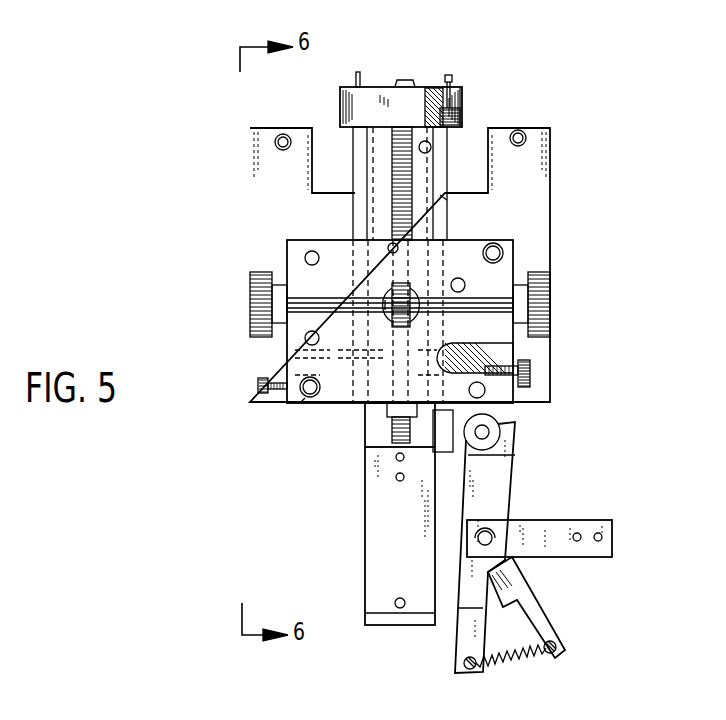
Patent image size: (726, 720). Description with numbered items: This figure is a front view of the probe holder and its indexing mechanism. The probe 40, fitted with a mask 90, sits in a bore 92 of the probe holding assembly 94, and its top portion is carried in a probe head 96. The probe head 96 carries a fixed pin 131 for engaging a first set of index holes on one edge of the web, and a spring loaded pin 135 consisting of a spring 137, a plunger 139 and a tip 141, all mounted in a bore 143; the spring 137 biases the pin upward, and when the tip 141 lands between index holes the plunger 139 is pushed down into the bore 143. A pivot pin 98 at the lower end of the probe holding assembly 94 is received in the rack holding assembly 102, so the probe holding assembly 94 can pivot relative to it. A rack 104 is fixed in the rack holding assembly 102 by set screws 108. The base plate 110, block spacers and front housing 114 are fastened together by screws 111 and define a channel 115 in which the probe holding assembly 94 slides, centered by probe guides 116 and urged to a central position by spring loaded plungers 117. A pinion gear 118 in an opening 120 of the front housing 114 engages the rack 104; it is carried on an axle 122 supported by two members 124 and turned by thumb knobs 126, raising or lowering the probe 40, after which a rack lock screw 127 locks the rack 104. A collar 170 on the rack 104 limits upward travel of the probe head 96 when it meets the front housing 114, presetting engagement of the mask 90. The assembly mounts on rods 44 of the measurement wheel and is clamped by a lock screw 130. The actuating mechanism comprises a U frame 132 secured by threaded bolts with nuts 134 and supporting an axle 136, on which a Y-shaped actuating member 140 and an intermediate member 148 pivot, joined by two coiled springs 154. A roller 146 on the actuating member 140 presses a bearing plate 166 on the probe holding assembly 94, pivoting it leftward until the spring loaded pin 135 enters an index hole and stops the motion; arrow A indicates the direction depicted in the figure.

The base plate 110 is at (293, 182).
The probe guides 116 is at (356, 155).
The probe holding assembly 94 is at (370, 220).
The probe head 96 is at (345, 108).
The mask 90 is at (398, 82).
The fixed pin 131 is at (355, 75).
The bore 143 is at (438, 88).
The tip 141 is at (448, 76).
The spring loaded pin 135 is at (459, 72).
The plunger 139 is at (458, 88).
The spring 137 is at (463, 110).
The bore 92 is at (430, 152).
The probe 40 is at (440, 200).
The front housing 114 is at (473, 268).
The screws 111 is at (305, 252).
The channel 115 is at (390, 246).
The axle 122 is at (300, 318).
The opening 120 is at (393, 288).
The pinion gear 118 is at (395, 318).
The members 124 is at (278, 283).
The thumb knobs 126 is at (252, 322).
The spring loaded plungers 117 is at (556, 322).
The rack lock screw 127 is at (530, 373).
The lock screw 130 is at (257, 392).
The rods 44 is at (300, 404).
The collar 170 is at (388, 412).
The rack holding assembly 102 is at (377, 534).
The rack 104 is at (390, 428).
The set screws 108 is at (396, 477).
The pivot pin 98 is at (399, 610).
The bearing plate 166 is at (455, 436).
The actuating member 140 is at (463, 643).
The roller 146 is at (488, 418).
The U frame 132 is at (558, 523).
The axle 136 is at (492, 534).
The threaded bolts with nuts 134 is at (580, 535).
The intermediate member 148 is at (548, 618).
The coiled springs 154 is at (522, 660).
The direction arrow A is at (642, 418).